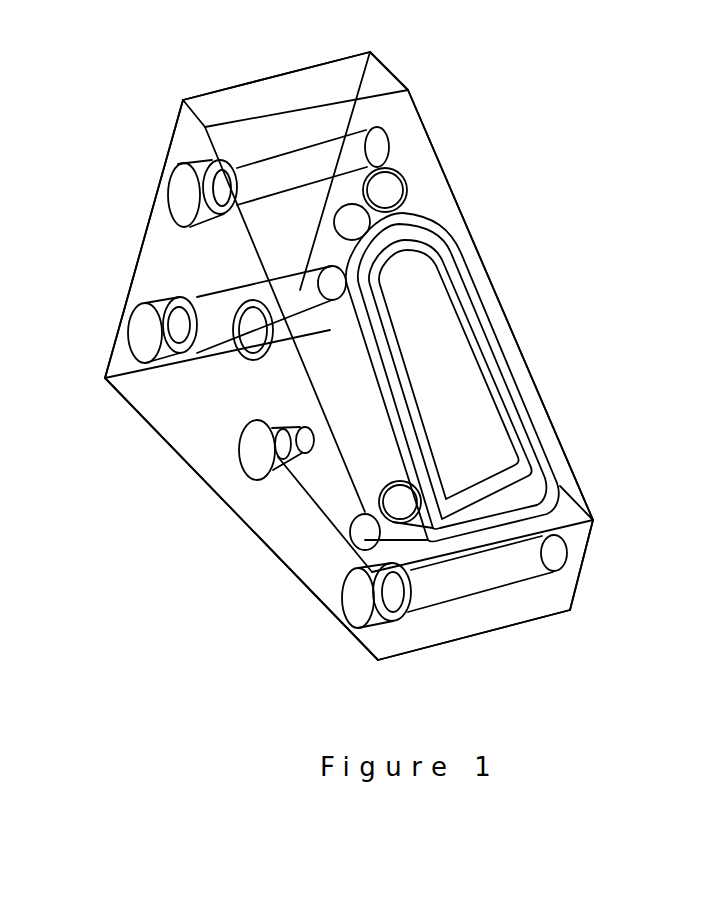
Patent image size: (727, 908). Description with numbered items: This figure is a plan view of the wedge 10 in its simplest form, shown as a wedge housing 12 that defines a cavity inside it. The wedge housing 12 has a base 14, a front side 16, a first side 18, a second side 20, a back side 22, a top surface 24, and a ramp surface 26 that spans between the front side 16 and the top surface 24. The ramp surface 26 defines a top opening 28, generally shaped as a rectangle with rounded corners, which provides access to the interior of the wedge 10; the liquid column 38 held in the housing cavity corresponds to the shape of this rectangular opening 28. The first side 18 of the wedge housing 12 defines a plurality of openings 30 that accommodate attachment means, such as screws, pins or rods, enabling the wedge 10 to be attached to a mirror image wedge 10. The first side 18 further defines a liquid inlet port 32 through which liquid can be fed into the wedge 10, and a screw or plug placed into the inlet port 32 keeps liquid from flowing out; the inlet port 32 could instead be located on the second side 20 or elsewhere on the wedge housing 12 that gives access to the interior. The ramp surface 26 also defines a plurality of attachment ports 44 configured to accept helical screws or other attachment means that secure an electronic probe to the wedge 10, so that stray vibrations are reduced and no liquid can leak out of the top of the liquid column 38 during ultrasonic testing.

The wedge 10 is at (481, 122).
The wedge housing 12 is at (300, 88).
The base 14 is at (290, 547).
The front side 16 is at (497, 607).
The first side 18 is at (187, 403).
The second side 20 is at (430, 183).
The back side 22 is at (155, 255).
The top surface 24 is at (243, 103).
The ramp surface 26 is at (568, 505).
The top opening 28 is at (503, 390).
The openings 30 is at (180, 190).
The liquid inlet port 32 is at (265, 338).
The liquid column 38 is at (403, 243).
The attachment ports 44 is at (385, 190).